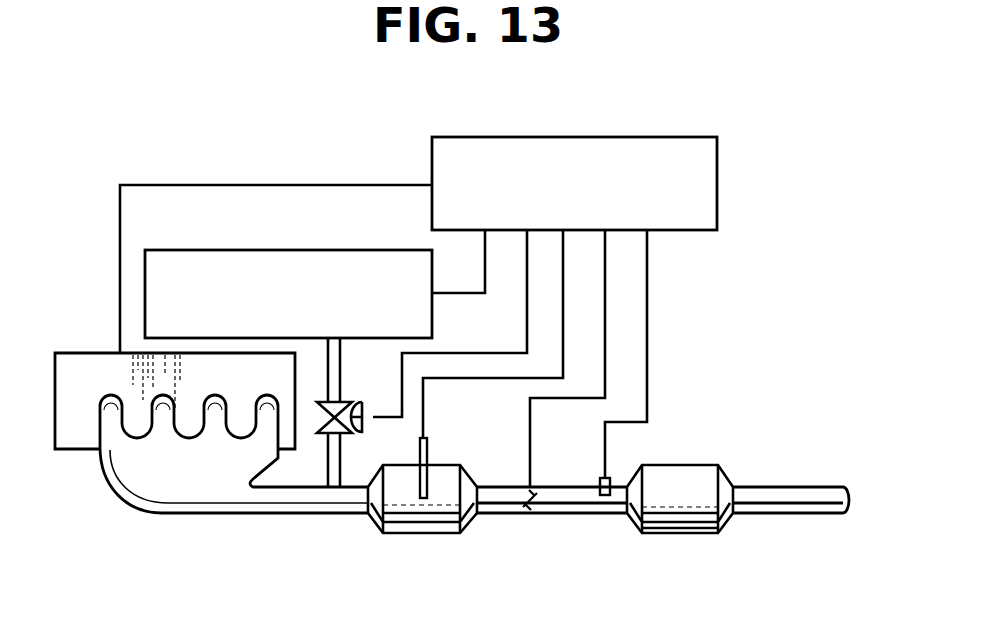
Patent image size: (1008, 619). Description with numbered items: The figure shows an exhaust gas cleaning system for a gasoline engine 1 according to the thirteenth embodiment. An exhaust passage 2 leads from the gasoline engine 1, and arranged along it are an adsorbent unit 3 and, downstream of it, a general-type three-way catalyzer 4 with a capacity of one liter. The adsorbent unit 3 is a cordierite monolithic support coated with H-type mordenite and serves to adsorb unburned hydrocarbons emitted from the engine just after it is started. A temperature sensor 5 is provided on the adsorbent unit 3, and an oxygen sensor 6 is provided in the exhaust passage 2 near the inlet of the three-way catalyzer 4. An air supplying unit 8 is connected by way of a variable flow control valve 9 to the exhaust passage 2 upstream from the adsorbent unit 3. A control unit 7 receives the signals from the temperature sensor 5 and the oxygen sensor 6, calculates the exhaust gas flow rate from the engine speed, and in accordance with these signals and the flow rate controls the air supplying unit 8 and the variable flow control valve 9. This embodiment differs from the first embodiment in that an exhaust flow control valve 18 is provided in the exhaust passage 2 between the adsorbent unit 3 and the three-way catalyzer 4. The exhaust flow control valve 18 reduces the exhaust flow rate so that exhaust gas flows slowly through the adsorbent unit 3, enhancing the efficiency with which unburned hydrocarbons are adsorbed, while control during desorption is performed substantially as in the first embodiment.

The gasoline engine 1 is at (78, 430).
The exhaust passage 2 is at (260, 498).
The adsorbent unit 3 is at (405, 522).
The three-way catalyzer 4 is at (680, 518).
The temperature sensor 5 is at (427, 448).
The oxygen sensor 6 is at (600, 480).
The control unit 7 is at (640, 137).
The air supplying unit 8 is at (288, 248).
The variable flow control valve 9 is at (325, 423).
The exhaust flow control valve 18 is at (530, 510).